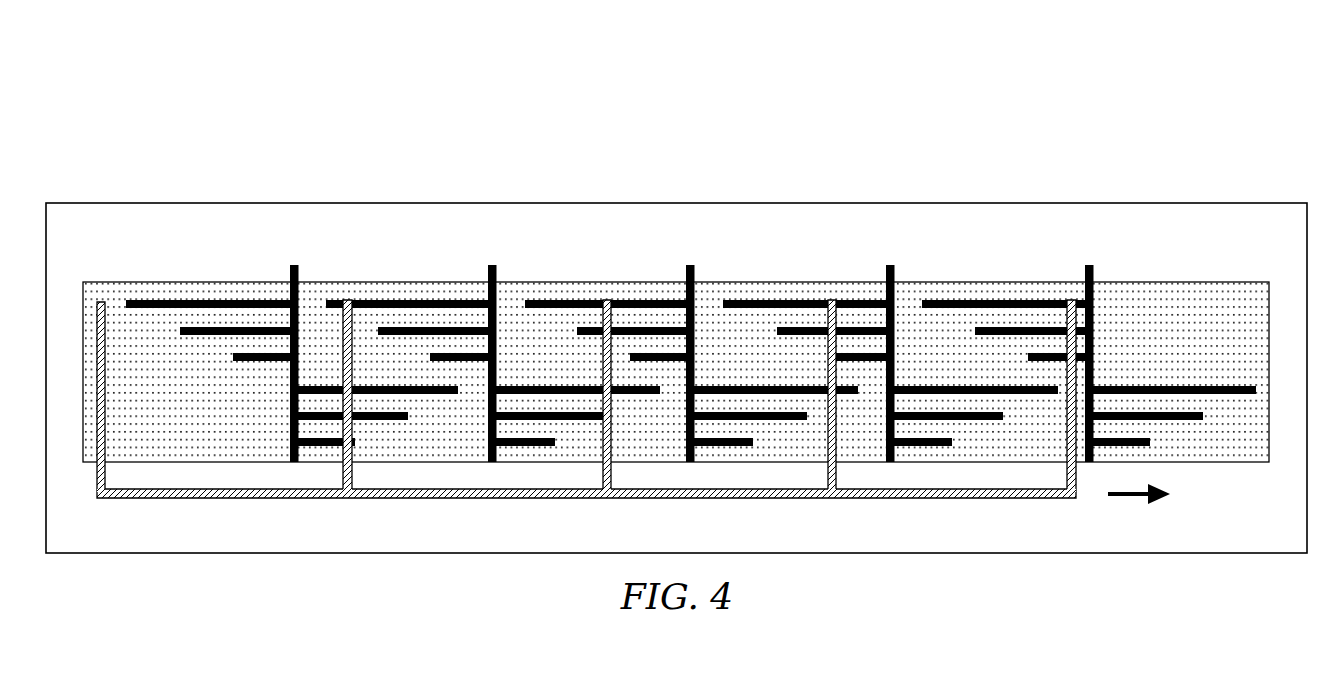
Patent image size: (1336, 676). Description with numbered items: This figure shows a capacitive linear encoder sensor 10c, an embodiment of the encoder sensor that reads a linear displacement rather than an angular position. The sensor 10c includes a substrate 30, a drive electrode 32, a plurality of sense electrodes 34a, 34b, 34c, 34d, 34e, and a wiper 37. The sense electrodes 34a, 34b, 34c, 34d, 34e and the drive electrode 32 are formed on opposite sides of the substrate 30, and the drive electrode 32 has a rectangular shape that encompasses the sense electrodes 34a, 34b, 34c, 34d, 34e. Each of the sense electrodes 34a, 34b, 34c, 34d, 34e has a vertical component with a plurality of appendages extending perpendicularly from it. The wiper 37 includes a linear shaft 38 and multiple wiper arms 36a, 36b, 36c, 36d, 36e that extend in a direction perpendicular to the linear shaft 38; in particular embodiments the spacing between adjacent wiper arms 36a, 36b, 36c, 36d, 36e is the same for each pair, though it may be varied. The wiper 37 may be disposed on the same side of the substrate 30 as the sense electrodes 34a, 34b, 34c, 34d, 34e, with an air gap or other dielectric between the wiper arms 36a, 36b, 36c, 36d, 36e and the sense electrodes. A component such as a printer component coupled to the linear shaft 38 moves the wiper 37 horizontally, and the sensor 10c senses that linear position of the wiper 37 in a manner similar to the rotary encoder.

The capacitive linear encoder sensor 10c is at (676, 286).
The substrate 30 is at (362, 203).
The drive electrode 32 is at (158, 282).
The sense electrode 34a is at (292, 263).
The sense electrode 34b is at (491, 263).
The sense electrode 34c is at (692, 263).
The sense electrode 34d is at (892, 263).
The sense electrode 34e is at (1090, 263).
The wiper arm 36a is at (103, 400).
The wiper arm 36b is at (353, 367).
The wiper arm 36c is at (604, 358).
The wiper arm 36d is at (829, 433).
The wiper arm 36e is at (1068, 432).
The wiper 37 is at (1080, 496).
The linear shaft 38 is at (92, 488).